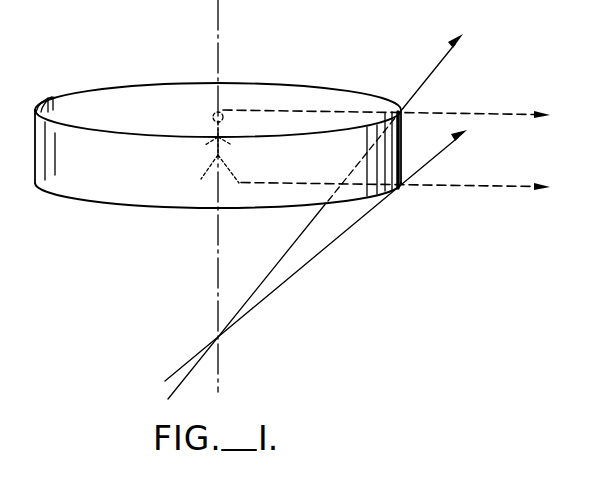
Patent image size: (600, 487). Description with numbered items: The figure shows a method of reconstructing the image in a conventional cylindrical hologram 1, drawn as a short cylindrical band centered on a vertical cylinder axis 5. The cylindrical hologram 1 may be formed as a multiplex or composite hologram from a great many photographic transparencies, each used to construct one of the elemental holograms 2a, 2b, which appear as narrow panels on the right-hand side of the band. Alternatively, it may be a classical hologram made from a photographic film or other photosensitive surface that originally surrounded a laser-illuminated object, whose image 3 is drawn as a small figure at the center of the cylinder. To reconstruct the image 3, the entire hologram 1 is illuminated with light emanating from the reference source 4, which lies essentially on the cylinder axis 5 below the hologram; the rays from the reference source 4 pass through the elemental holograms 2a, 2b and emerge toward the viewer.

The cylindrical hologram 1 is at (269, 94).
The elemental hologram 2a is at (372, 196).
The elemental hologram 2b is at (370, 191).
The image 3 is at (200, 178).
The reference source 4 is at (219, 338).
The cylinder axis 5 is at (219, 28).